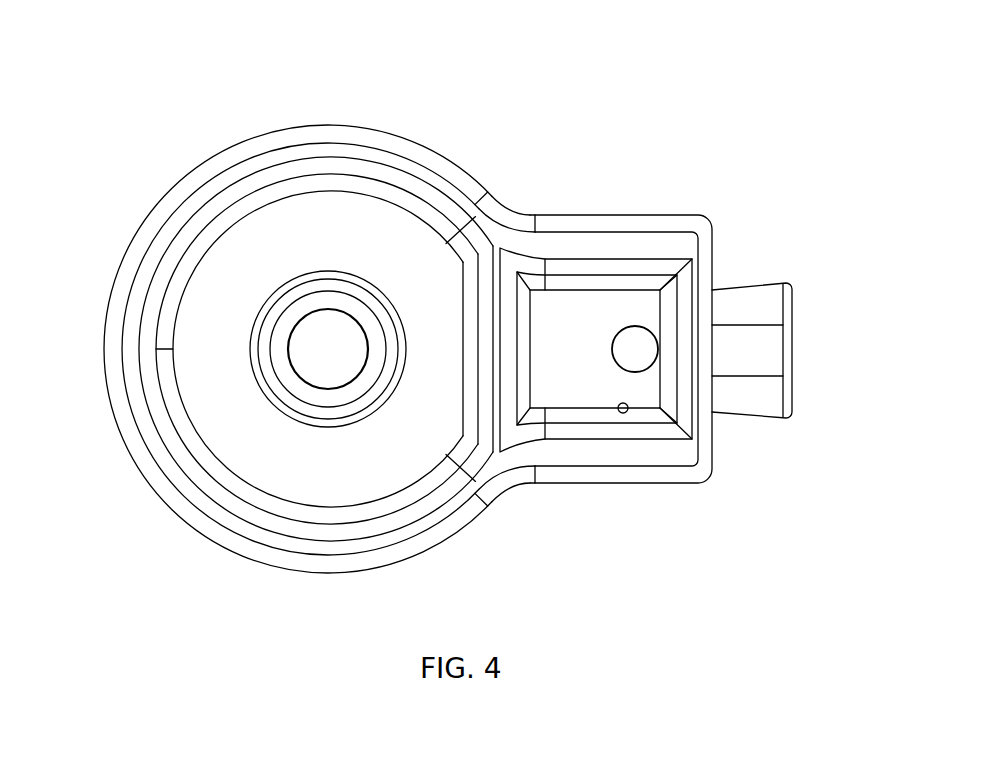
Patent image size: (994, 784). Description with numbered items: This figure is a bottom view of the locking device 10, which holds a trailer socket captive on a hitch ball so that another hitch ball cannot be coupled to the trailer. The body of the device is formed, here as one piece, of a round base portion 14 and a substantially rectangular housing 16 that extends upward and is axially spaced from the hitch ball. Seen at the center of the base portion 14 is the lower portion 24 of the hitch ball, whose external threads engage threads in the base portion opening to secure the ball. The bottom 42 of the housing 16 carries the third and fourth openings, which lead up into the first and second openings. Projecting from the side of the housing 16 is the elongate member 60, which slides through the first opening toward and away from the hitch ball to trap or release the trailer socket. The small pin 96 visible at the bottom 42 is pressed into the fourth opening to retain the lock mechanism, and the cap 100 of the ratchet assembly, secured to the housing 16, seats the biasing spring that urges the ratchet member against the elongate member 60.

The locking device 10 is at (812, 127).
The base portion 14 is at (381, 140).
The housing 16 is at (571, 213).
The lower portion 24 is at (317, 360).
The bottom 42 is at (598, 310).
The elongate member 60 is at (742, 401).
The pin 96 is at (623, 414).
The cap 100 is at (648, 352).